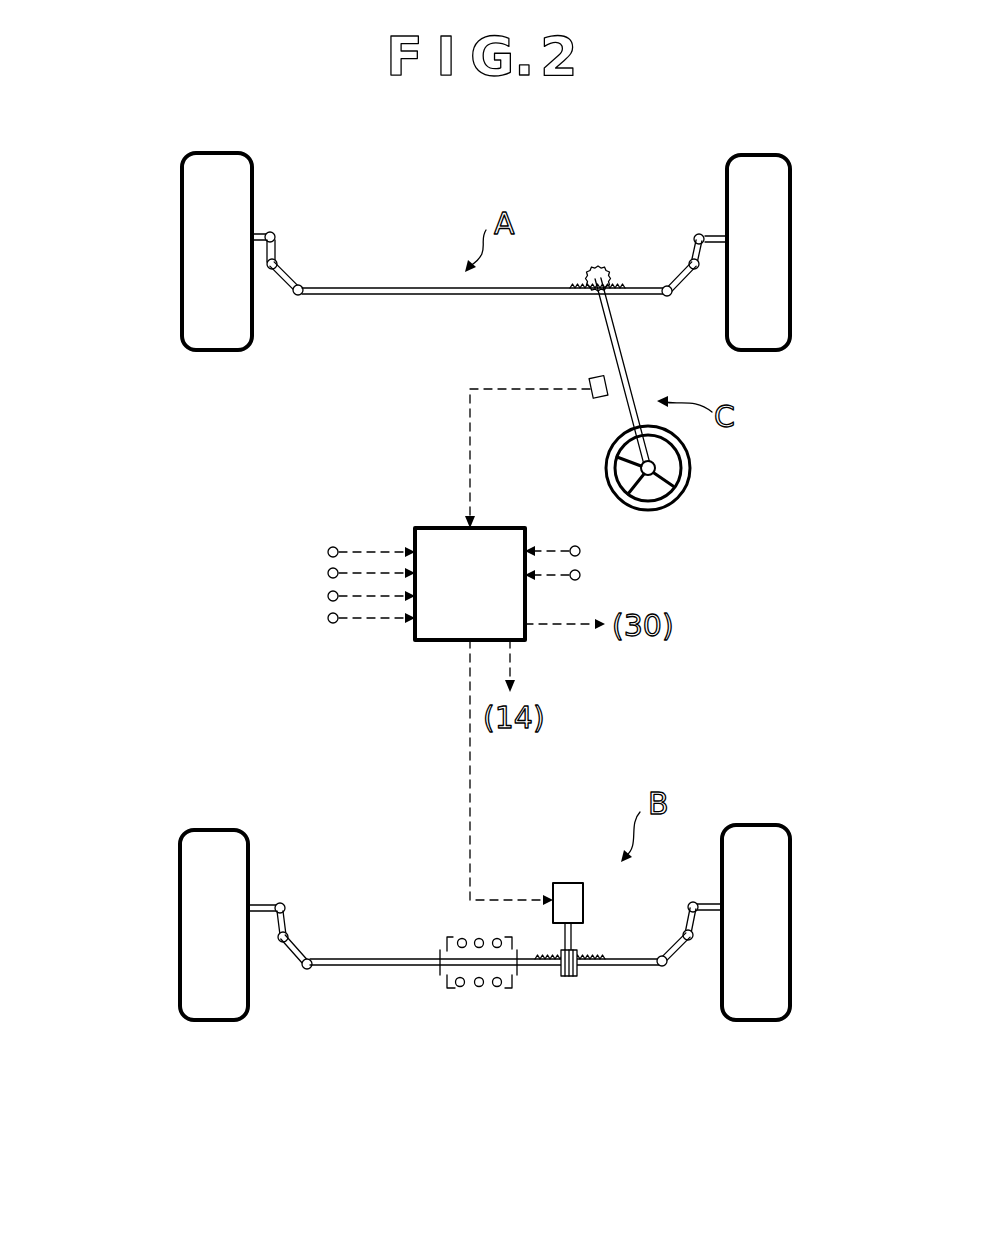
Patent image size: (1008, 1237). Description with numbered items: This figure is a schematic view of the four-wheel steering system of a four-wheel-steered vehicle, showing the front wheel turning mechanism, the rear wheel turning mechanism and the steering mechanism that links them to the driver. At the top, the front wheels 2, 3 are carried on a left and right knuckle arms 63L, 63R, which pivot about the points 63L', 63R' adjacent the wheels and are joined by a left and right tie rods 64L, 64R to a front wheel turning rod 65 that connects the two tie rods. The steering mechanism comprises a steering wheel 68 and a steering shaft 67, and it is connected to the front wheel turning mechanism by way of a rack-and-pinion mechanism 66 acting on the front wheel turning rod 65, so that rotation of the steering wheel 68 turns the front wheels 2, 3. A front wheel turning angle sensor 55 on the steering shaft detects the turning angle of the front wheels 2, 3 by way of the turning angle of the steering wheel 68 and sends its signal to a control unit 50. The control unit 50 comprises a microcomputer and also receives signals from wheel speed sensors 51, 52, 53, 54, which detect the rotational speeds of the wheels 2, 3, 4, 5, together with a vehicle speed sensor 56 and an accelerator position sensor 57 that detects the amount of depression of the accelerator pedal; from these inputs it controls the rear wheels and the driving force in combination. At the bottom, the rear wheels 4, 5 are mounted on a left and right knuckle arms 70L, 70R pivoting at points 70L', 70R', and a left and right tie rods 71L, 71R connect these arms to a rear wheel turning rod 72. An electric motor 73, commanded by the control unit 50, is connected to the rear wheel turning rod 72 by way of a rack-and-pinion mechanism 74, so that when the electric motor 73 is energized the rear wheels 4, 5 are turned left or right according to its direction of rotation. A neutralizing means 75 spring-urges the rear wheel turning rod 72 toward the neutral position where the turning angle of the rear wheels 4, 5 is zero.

The front wheel 2 is at (192, 260).
The front wheel 3 is at (783, 328).
The rear wheel 4 is at (192, 935).
The rear wheel 5 is at (783, 938).
The front left kingpin 63L' is at (304, 202).
The left knuckle arm 63L is at (317, 242).
The left tie rod 64L is at (292, 301).
The front wheel turning rod 65 is at (442, 296).
The rack-and-pinion mechanism 66 is at (598, 266).
The front right kingpin 63R' is at (662, 202).
The right knuckle arm 63R is at (666, 237).
The right tie rod 64R is at (680, 298).
The steering shaft 67 is at (638, 394).
The steering wheel 68 is at (690, 477).
The front wheel turning angle sensor 55 is at (596, 377).
The control unit 50 is at (440, 642).
The wheel speed sensor 51 is at (329, 547).
The wheel speed sensor 52 is at (328, 570).
The wheel speed sensor 53 is at (328, 597).
The wheel speed sensor 54 is at (329, 621).
The vehicle speed sensor 56 is at (580, 551).
The accelerator position sensor 57 is at (580, 575).
The rear left kingpin 70L' is at (315, 875).
The left knuckle arm 70L is at (326, 919).
The left tie rod 71L is at (295, 968).
The rear wheel turning rod 72 is at (432, 968).
The neutralizing means 75 is at (478, 1008).
The electric motor 73 is at (576, 883).
The rack-and-pinion mechanism 74 is at (568, 977).
The rear right kingpin 70R' is at (688, 871).
The right knuckle arm 70R is at (653, 914).
The right tie rod 71R is at (675, 968).